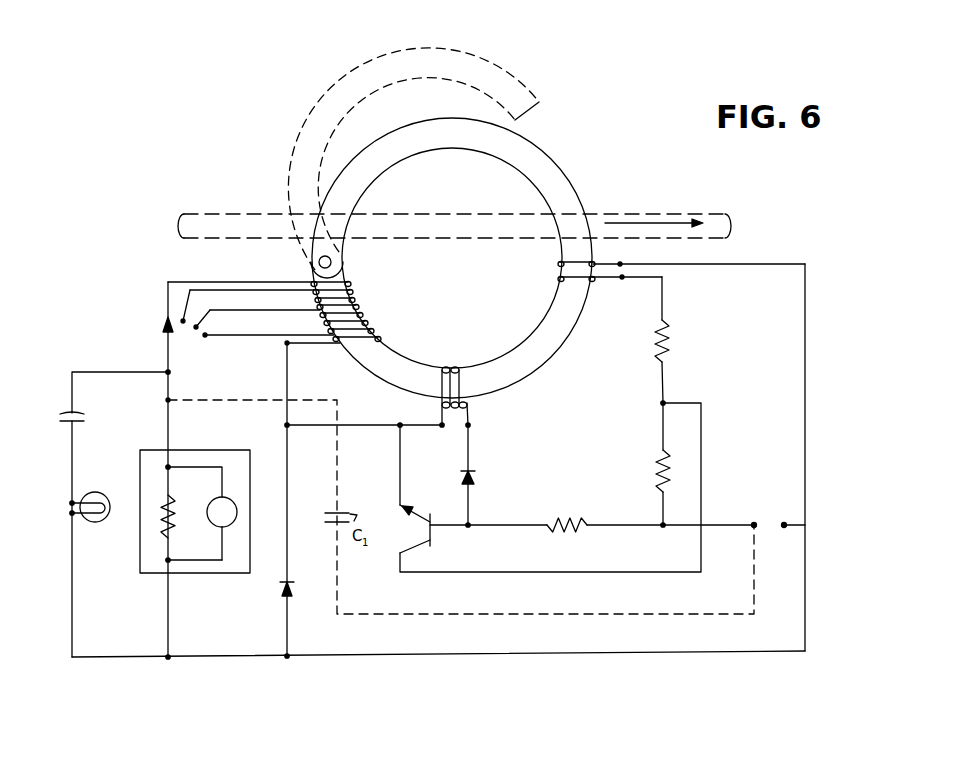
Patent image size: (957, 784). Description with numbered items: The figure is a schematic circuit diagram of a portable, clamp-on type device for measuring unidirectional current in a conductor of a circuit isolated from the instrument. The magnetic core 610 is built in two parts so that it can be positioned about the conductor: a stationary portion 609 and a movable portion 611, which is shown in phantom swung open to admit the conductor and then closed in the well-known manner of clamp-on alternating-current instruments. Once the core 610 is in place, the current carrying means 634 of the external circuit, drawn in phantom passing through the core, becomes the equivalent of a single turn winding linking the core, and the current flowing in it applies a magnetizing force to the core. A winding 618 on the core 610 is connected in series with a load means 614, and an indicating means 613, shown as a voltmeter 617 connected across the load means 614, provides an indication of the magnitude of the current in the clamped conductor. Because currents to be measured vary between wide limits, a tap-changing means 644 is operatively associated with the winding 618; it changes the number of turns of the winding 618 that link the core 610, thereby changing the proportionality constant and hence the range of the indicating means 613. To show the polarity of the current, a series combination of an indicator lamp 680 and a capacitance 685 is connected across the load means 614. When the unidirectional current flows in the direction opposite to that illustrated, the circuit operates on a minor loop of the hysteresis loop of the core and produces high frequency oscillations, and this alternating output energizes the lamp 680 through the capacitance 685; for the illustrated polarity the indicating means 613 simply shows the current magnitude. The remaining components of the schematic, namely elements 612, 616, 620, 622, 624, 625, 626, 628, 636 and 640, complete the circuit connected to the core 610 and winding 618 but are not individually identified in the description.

The stationary portion 609 is at (453, 258).
The core 610 is at (454, 223).
The movable portion 611 is at (433, 159).
The transistor 612 is at (433, 488).
The indicating means 613 is at (190, 491).
The load means 614 is at (136, 522).
The battery 616 is at (774, 495).
The voltmeter 617 is at (245, 516).
The winding 618 is at (356, 309).
The winding 620 is at (652, 271).
The resistor 622 is at (693, 340).
The resistor 624 is at (637, 465).
The junction 625 is at (550, 483).
The winding 626 is at (459, 379).
The resistor 628 is at (611, 509).
The current carrying means 634 is at (474, 206).
The diode 636 is at (491, 475).
The diode 640 is at (267, 596).
The tap-changing means 644 is at (144, 347).
The indicator lamp 680 is at (95, 489).
The capacitance 685 is at (115, 513).